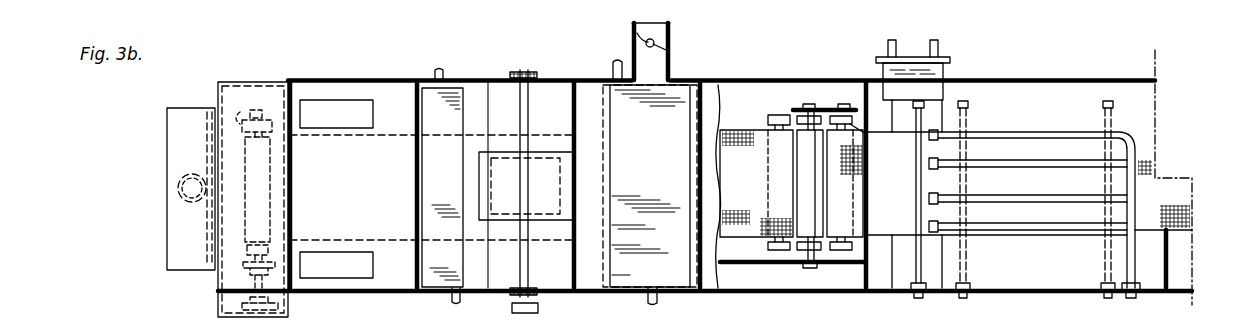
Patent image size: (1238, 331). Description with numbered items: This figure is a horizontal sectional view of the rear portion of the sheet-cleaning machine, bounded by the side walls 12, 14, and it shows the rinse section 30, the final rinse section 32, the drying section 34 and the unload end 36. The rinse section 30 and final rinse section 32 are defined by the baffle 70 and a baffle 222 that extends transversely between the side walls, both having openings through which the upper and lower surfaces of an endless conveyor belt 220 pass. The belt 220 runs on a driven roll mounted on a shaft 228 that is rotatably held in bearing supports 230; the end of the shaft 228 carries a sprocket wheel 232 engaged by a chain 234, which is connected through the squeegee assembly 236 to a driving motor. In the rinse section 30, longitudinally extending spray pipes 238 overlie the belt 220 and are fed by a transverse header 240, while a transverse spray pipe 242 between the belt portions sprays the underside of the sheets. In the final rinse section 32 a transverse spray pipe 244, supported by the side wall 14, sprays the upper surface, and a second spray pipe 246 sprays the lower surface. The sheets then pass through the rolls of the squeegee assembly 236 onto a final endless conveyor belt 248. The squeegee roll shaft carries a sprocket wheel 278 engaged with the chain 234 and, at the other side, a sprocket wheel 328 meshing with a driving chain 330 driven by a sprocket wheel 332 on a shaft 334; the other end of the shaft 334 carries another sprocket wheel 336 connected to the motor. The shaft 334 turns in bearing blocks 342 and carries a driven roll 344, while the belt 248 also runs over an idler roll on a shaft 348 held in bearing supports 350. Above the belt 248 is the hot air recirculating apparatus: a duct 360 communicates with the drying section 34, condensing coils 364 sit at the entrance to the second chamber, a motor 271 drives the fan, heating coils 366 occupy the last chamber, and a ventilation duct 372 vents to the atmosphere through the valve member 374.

The side wall 12 is at (683, 78).
The side wall 14 is at (1020, 292).
The rinse section 30 is at (1058, 90).
The final rinse section 32 is at (876, 97).
The drying section 34 is at (722, 95).
The unload end 36 is at (165, 143).
The baffle 70 is at (1170, 262).
The endless conveyor belt 220 is at (1147, 153).
The baffle 222 is at (878, 288).
The shaft 228 is at (856, 130).
The bearing supports 230 is at (858, 118).
The sprocket wheel 232 is at (838, 108).
The chain 234 is at (826, 108).
The squeegee assembly 236 is at (815, 176).
The spray pipes 238 is at (1042, 160).
The header 240 is at (1140, 246).
The spray pipe 242 is at (1107, 246).
The spray pipe 244 is at (914, 168).
The second spray pipe 246 is at (968, 118).
The final endless conveyor belt 248 is at (748, 150).
The motor 271 is at (559, 323).
The sprocket wheel 278 is at (797, 110).
The sprocket wheel 328 is at (822, 265).
The driving chain 330 is at (748, 266).
The sprocket wheel 332 is at (245, 262).
The shaft 334 is at (288, 214).
The sprocket wheel 336 is at (250, 114).
The bearing blocks 342 is at (276, 123).
The driven roll 344 is at (285, 193).
The shaft 348 is at (775, 245).
The bearing supports 350 is at (768, 120).
The duct 360 is at (338, 125).
The condensing coils 364 is at (453, 191).
The heating coils 366 is at (660, 166).
The ventilation duct 372 is at (670, 32).
The valve member 374 is at (637, 35).